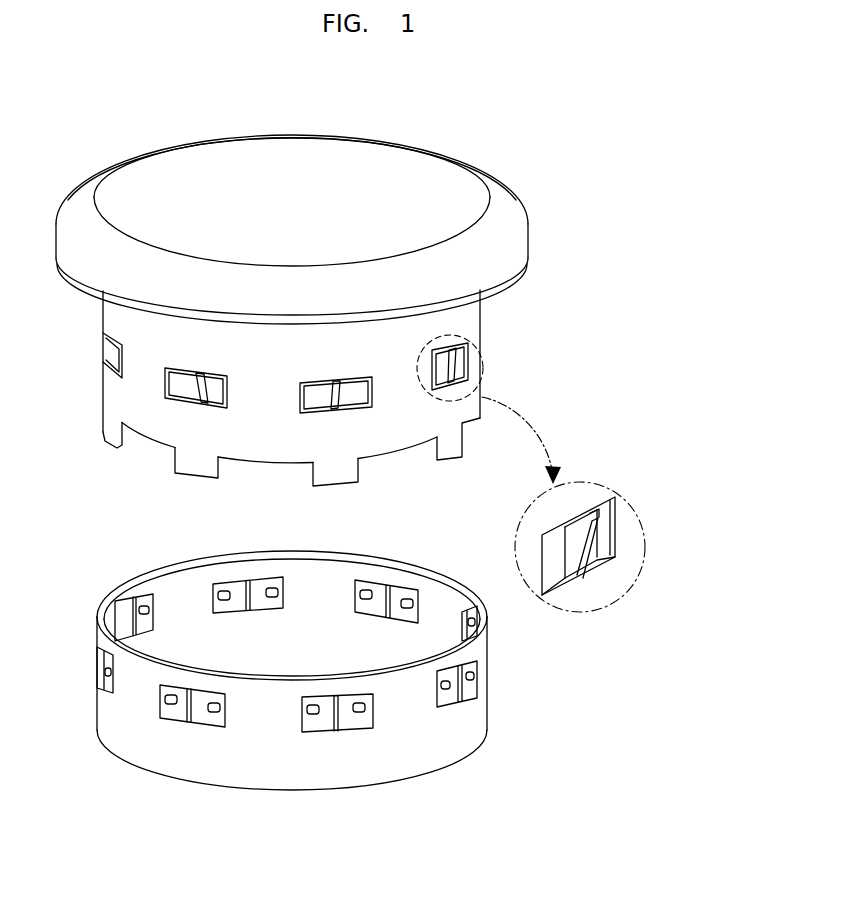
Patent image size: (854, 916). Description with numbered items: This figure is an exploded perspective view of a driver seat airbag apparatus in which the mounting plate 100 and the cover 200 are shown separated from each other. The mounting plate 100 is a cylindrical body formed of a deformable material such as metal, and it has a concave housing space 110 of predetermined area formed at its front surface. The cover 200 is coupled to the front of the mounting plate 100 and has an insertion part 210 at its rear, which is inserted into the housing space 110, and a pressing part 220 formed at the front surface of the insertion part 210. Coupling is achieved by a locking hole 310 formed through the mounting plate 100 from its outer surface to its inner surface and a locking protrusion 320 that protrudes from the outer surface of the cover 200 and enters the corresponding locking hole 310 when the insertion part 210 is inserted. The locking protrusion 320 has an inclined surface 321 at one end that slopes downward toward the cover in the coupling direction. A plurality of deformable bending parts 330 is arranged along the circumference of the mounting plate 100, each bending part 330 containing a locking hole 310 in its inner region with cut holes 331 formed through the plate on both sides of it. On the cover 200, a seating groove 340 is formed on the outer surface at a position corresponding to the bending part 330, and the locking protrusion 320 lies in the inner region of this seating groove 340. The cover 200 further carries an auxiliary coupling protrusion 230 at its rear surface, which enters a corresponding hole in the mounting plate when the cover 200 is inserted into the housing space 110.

The mounting plate 100 is at (448, 753).
The housing space 110 is at (407, 640).
The cover 200 is at (454, 208).
The insertion part 210 is at (481, 314).
The pressing part 220 is at (505, 236).
The auxiliary coupling protrusion 230 is at (340, 476).
The locking hole 310 is at (188, 719).
The locking protrusion 320 is at (484, 356).
The inclined surface 321 is at (486, 376).
The bending part 330 is at (181, 713).
The cut hole 331 is at (168, 717).
The seating groove 340 is at (433, 365).